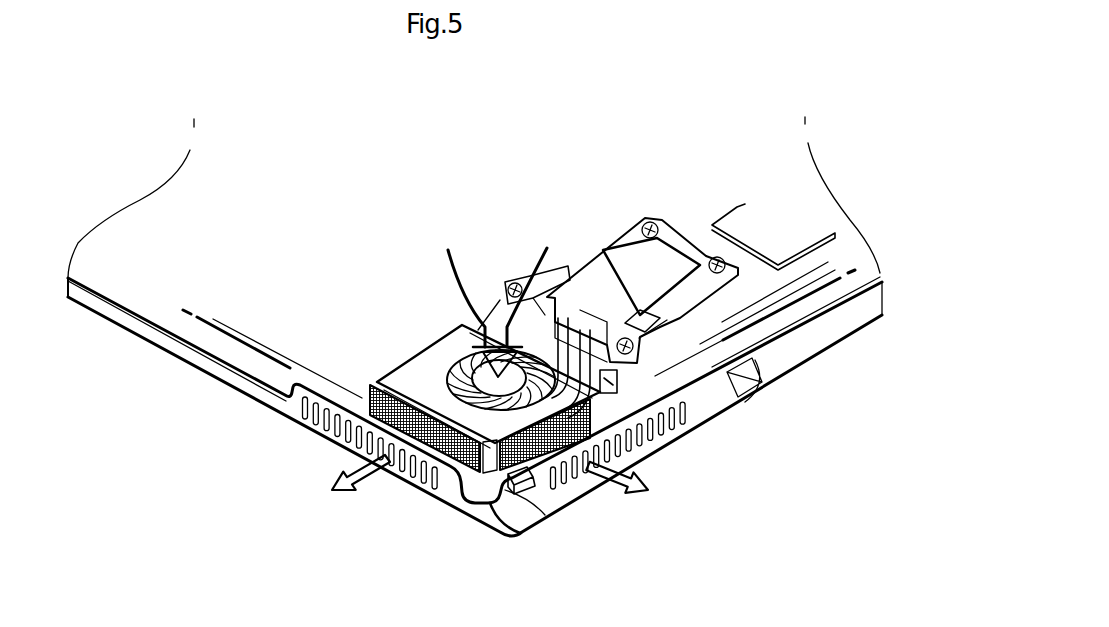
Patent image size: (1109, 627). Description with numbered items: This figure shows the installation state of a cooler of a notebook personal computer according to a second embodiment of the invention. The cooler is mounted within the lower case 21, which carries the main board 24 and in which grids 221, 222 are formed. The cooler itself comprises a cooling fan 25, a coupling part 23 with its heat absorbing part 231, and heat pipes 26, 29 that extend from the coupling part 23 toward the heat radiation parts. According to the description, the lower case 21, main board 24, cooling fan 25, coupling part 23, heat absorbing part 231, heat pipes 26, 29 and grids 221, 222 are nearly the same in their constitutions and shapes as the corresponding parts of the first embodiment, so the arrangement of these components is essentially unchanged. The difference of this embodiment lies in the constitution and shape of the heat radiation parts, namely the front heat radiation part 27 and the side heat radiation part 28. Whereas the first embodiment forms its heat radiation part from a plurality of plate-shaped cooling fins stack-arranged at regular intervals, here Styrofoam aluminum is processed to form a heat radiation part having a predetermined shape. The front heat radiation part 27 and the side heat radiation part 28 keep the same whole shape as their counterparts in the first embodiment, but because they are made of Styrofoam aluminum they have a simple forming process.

The lower case 21 is at (797, 350).
The grid 221 is at (423, 490).
The grid 222 is at (667, 430).
The coupling part 23 is at (648, 262).
The heat absorbing part 231 is at (662, 258).
The main board 24 is at (800, 300).
The cooling fan 25 is at (440, 378).
The heat pipe 26 is at (380, 376).
The front heat radiation part 27 is at (328, 440).
The side heat radiation part 28 is at (540, 492).
The heat pipe 29 is at (617, 372).